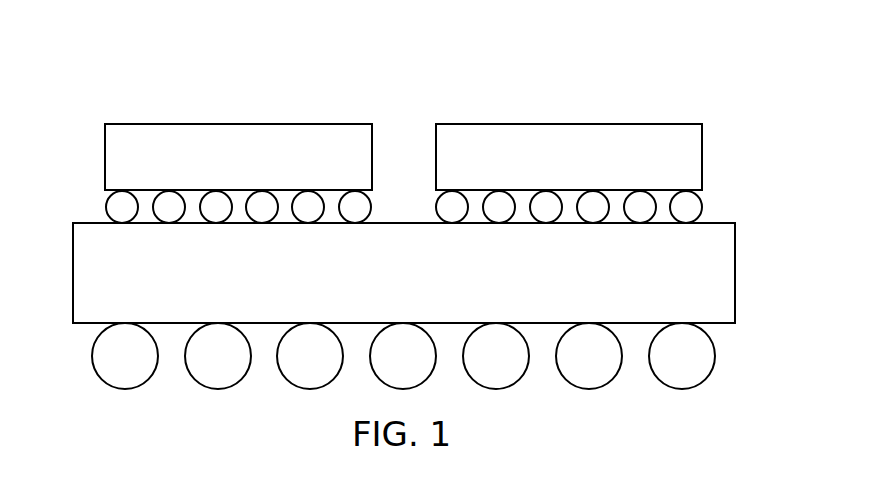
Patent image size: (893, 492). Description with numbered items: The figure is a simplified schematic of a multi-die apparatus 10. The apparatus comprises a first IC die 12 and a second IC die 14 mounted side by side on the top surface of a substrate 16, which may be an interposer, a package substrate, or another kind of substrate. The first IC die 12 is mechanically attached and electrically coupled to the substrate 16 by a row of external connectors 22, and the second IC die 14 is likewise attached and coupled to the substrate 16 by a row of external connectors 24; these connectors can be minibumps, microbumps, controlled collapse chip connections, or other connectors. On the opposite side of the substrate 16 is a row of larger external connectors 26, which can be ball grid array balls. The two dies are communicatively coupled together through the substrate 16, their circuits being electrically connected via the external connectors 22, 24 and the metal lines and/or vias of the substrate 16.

The multi-die apparatus 10 is at (677, 43).
The first IC die 12 is at (154, 170).
The second IC die 14 is at (480, 170).
The substrate 16 is at (128, 285).
The external connectors 22 is at (137, 207).
The external connectors 24 is at (668, 208).
The external connectors 26 is at (137, 368).